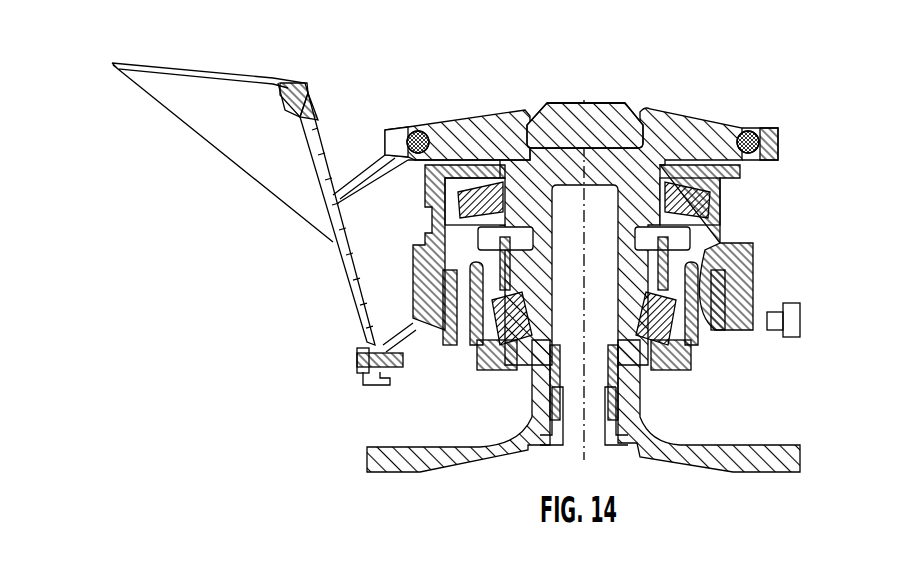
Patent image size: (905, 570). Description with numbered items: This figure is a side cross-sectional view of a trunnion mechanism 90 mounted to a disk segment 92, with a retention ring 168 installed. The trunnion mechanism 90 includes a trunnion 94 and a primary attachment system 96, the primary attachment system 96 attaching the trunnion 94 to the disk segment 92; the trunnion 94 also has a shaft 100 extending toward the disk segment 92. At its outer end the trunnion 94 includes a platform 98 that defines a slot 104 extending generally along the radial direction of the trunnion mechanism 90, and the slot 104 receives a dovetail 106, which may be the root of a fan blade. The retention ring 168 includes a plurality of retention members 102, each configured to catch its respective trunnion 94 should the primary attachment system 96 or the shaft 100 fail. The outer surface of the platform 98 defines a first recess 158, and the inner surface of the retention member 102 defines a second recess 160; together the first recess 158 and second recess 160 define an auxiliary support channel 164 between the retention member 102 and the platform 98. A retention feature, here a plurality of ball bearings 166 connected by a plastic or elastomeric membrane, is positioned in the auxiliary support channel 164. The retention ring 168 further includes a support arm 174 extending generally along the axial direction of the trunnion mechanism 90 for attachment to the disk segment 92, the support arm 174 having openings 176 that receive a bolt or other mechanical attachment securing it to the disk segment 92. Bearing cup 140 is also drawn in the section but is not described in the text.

The trunnion mechanism 90 is at (686, 78).
The disk segment 92 is at (740, 277).
The trunnion 94 is at (617, 165).
The primary attachment system 96 is at (468, 374).
The platform 98 is at (477, 127).
The shaft 100 is at (690, 230).
The retention member 102 is at (388, 133).
The slot 104 is at (606, 120).
The dovetail 106 is at (553, 103).
The bearing cup 140 is at (735, 193).
The first recess 158 is at (413, 153).
The second recess 160 is at (422, 133).
The auxiliary support channel 164 is at (756, 133).
The ball bearings 166 is at (743, 127).
The retention ring 168 is at (313, 155).
The support arm 174 is at (348, 282).
The openings 176 is at (353, 361).